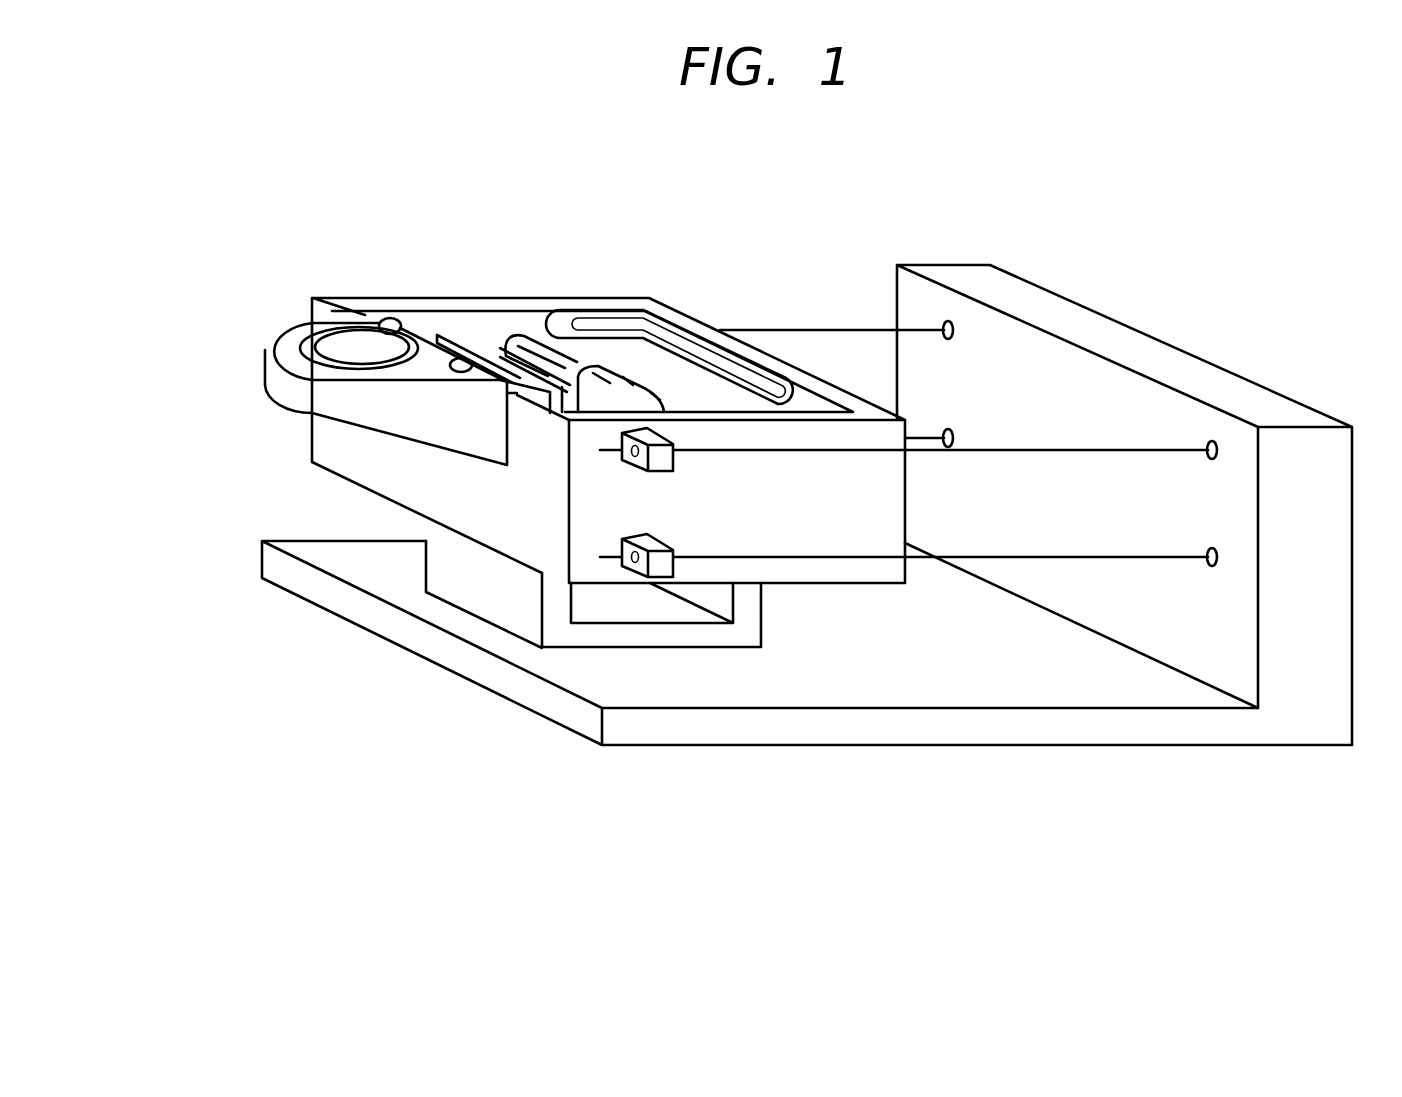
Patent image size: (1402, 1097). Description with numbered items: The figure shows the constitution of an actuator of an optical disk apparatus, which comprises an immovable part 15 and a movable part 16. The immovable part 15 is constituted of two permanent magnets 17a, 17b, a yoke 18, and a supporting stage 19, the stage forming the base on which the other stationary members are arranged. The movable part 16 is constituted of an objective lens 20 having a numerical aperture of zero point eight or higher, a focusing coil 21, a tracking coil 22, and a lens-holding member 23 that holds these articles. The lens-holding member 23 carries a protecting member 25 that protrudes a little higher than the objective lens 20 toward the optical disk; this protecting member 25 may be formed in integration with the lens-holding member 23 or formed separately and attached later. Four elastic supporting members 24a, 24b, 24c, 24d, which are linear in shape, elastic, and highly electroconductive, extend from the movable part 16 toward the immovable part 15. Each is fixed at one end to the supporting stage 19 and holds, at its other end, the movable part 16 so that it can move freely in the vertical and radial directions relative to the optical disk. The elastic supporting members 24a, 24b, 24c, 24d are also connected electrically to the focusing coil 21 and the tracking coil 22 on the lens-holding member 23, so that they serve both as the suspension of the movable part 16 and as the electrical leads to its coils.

The immovable part 15 is at (870, 775).
The movable part 16 is at (292, 442).
The permanent magnet 17a is at (525, 352).
The permanent magnet 17b is at (668, 362).
The yoke 18 is at (503, 598).
The supporting stage 19 is at (690, 683).
The objective lens 20 is at (330, 348).
The focusing coil 21 is at (625, 330).
The tracking coil 22 is at (612, 347).
The lens-holding member 23 is at (383, 470).
The elastic supporting member 24a is at (842, 330).
The elastic supporting member 24b is at (1098, 452).
The elastic supporting member 24c is at (925, 432).
The elastic supporting member 24d is at (1143, 558).
The protecting member 25 is at (463, 362).